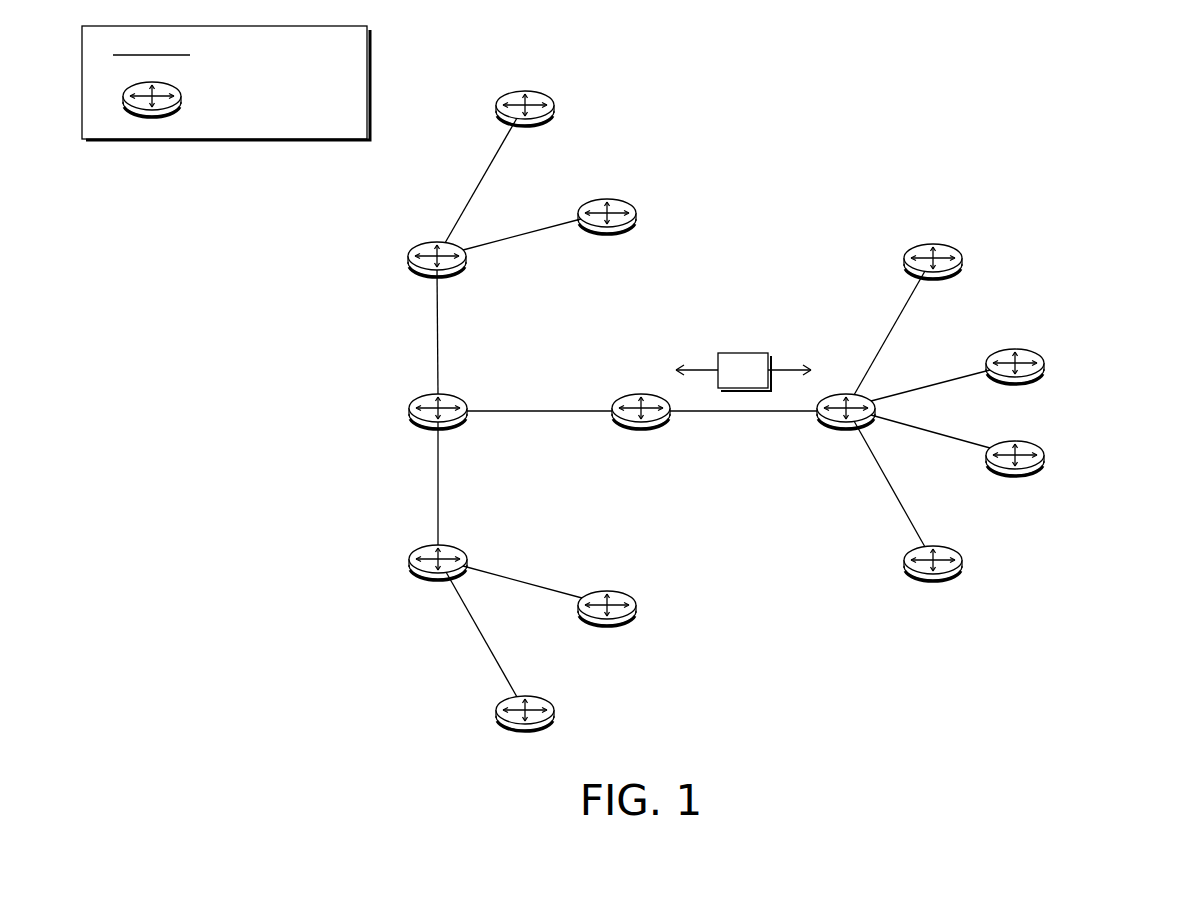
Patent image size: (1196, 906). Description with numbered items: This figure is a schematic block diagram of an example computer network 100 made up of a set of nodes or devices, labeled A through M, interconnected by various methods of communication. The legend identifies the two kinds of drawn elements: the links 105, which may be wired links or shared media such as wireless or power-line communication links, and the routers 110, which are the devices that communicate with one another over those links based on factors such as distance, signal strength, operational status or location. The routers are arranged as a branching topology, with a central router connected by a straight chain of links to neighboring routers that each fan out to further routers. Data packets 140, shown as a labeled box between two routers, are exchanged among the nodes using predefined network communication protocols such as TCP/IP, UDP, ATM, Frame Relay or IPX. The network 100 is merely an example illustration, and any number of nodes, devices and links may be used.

The computer network 100 is at (1103, 80).
The links 105 is at (551, 370).
The routers 110 is at (649, 386).
The data packets 140 is at (743, 372).